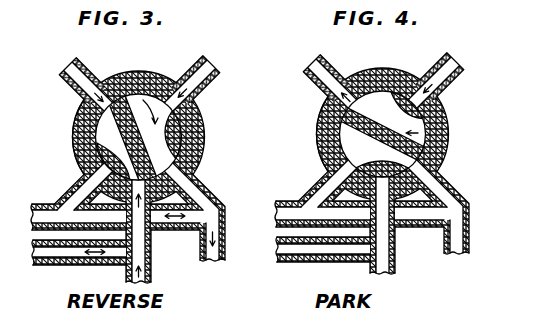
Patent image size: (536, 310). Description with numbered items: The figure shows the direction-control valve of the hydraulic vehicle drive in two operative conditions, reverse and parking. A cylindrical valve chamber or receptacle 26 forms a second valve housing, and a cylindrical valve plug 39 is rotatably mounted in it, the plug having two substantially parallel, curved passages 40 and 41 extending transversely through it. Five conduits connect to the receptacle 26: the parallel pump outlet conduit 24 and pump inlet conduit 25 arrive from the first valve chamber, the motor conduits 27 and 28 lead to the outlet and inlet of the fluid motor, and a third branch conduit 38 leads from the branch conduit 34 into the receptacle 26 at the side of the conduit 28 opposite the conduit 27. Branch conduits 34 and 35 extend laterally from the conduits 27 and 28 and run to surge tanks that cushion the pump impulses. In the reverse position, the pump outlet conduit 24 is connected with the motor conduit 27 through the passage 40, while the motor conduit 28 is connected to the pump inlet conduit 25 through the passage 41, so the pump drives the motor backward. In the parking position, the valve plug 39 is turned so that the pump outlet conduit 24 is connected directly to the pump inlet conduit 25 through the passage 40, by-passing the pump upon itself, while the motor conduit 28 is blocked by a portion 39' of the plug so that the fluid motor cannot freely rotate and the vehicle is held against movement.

In FIG. 3, the pump outlet conduit 24 is at (207, 90).
In FIG. 4, the pump outlet conduit 24 is at (442, 82).
In FIG. 3, the pump inlet conduit 25 is at (78, 88).
In FIG. 4, the pump inlet conduit 25 is at (319, 83).
In FIG. 3, the cylindrical valve chamber or receptacle 26 is at (78, 135).
In FIG. 4, the cylindrical valve chamber or receptacle 26 is at (303, 134).
In FIG. 3, the fluid conduit 27 is at (200, 253).
In FIG. 4, the fluid conduit 27 is at (437, 214).
In FIG. 3, the fluid conduit 28 is at (125, 275).
In FIG. 4, the fluid conduit 28 is at (362, 232).
In FIG. 3, the branch conduit 34 is at (43, 203).
In FIG. 4, the branch conduit 34 is at (365, 205).
In FIG. 3, the branch conduit 35 is at (57, 265).
In FIG. 4, the branch conduit 35 is at (319, 264).
In FIG. 3, the third branch conduit 38 is at (72, 188).
In FIG. 4, the third branch conduit 38 is at (316, 183).
In FIG. 3, the cylindrical valve plug 39 is at (171, 136).
In FIG. 4, the cylindrical valve plug 39 is at (406, 133).
In FIG. 4, the portion of the valve plug 39' is at (378, 158).
In FIG. 3, the curved passage 40 is at (170, 80).
In FIG. 4, the curved passage 40 is at (383, 122).
In FIG. 3, the curved passage 41 is at (134, 136).
In FIG. 4, the curved passage 41 is at (383, 134).